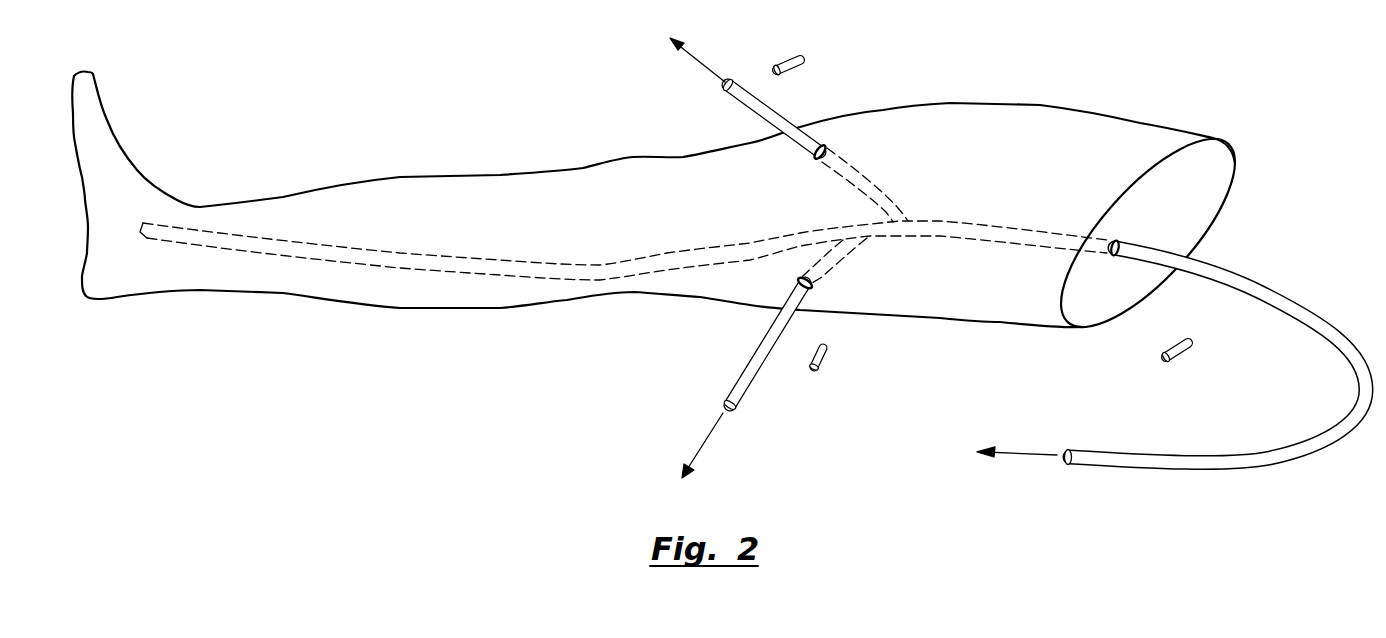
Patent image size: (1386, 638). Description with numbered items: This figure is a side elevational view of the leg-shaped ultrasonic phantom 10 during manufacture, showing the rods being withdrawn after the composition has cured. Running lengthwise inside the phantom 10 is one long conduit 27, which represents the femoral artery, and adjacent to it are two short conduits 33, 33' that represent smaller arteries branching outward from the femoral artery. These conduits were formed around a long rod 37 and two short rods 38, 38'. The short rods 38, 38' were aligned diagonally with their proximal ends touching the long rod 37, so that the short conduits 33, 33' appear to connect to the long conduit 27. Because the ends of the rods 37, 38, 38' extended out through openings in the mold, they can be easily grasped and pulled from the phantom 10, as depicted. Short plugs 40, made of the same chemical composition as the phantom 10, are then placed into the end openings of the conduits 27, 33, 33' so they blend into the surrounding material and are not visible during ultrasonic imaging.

The phantom 10 is at (132, 133).
The long conduit 27 is at (667, 267).
The short conduit 33 is at (871, 149).
The short conduit 33' is at (863, 298).
The long rod 37 is at (1235, 270).
The short rod 38 is at (749, 96).
The short rod 38' is at (745, 377).
The short plug 40 is at (797, 63).